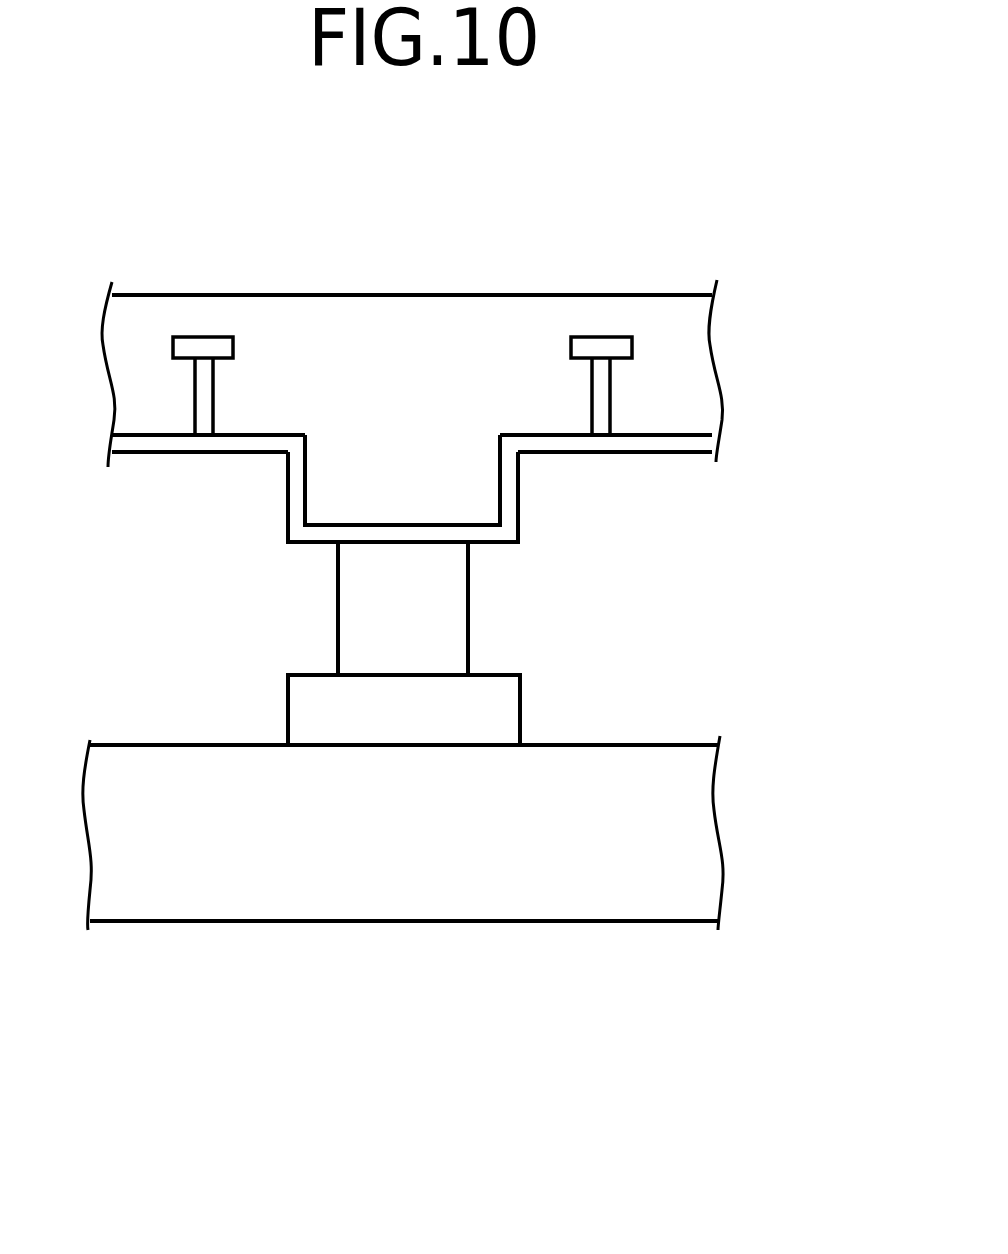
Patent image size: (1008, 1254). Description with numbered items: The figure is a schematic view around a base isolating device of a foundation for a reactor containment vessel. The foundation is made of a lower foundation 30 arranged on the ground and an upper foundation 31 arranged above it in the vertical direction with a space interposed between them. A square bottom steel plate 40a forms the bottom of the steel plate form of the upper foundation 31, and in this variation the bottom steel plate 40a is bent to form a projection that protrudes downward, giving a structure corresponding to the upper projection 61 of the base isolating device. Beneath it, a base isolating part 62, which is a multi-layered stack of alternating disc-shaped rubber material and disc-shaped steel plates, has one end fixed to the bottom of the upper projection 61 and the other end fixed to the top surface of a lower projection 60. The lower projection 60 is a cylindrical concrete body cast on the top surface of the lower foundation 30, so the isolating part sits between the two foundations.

The upper foundation 31 is at (420, 290).
The bottom steel plate 40a is at (702, 439).
The upper projection 61 is at (522, 522).
The base isolating part 62 is at (357, 620).
The lower projection 60 is at (520, 708).
The lower foundation 30 is at (422, 930).